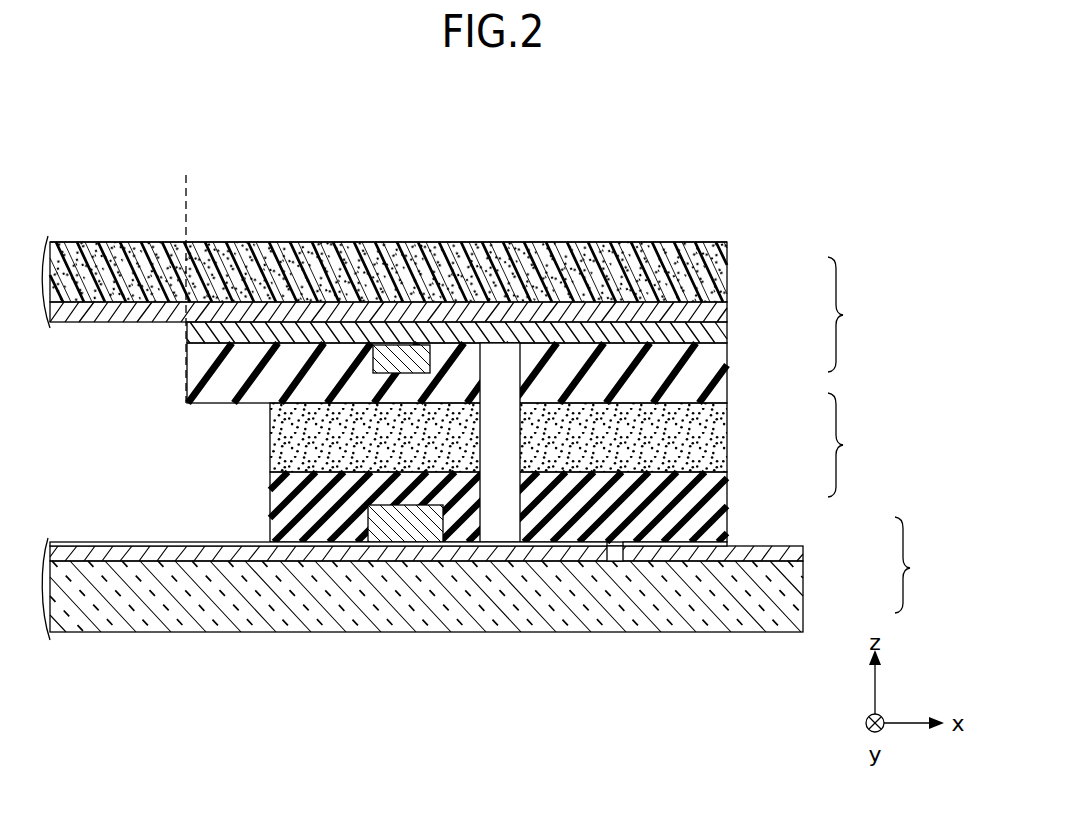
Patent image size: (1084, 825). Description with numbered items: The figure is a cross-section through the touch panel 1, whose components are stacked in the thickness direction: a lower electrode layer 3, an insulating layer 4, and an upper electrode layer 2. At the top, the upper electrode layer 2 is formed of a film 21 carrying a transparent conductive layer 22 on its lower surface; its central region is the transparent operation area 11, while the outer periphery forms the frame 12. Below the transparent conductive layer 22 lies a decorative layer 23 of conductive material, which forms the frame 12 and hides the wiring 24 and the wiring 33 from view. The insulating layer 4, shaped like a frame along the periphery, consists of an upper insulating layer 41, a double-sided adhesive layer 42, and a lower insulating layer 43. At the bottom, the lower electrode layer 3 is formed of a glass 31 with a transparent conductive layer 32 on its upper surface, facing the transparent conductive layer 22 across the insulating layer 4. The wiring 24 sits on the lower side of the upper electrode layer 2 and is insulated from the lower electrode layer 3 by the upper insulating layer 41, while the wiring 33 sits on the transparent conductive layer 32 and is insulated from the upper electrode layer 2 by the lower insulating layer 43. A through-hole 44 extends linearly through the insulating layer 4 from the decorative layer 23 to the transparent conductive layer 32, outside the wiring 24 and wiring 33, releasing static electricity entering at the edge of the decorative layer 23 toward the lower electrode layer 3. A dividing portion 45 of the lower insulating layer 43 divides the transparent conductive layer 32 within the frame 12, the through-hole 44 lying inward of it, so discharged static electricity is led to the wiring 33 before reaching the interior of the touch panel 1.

The touch panel 1 is at (829, 176).
The upper electrode layer 2 is at (451, 304).
The lower electrode layer 3 is at (485, 572).
The insulating layer 4 is at (524, 442).
The transparent operation area 11 is at (114, 228).
The frame 12 is at (447, 228).
The film 21 is at (713, 271).
The transparent conductive layer 22 is at (713, 308).
The decorative layer 23 is at (713, 330).
The wiring 24 is at (408, 358).
The glass 31 is at (798, 592).
The transparent conductive layer 32 is at (798, 550).
The wiring 33 is at (408, 533).
The upper insulating layer 41 is at (713, 373).
The double-sided adhesive layer 42 is at (713, 442).
The lower insulating layer 43 is at (712, 515).
The through-hole 44 is at (488, 447).
The dividing portion 45 is at (613, 556).